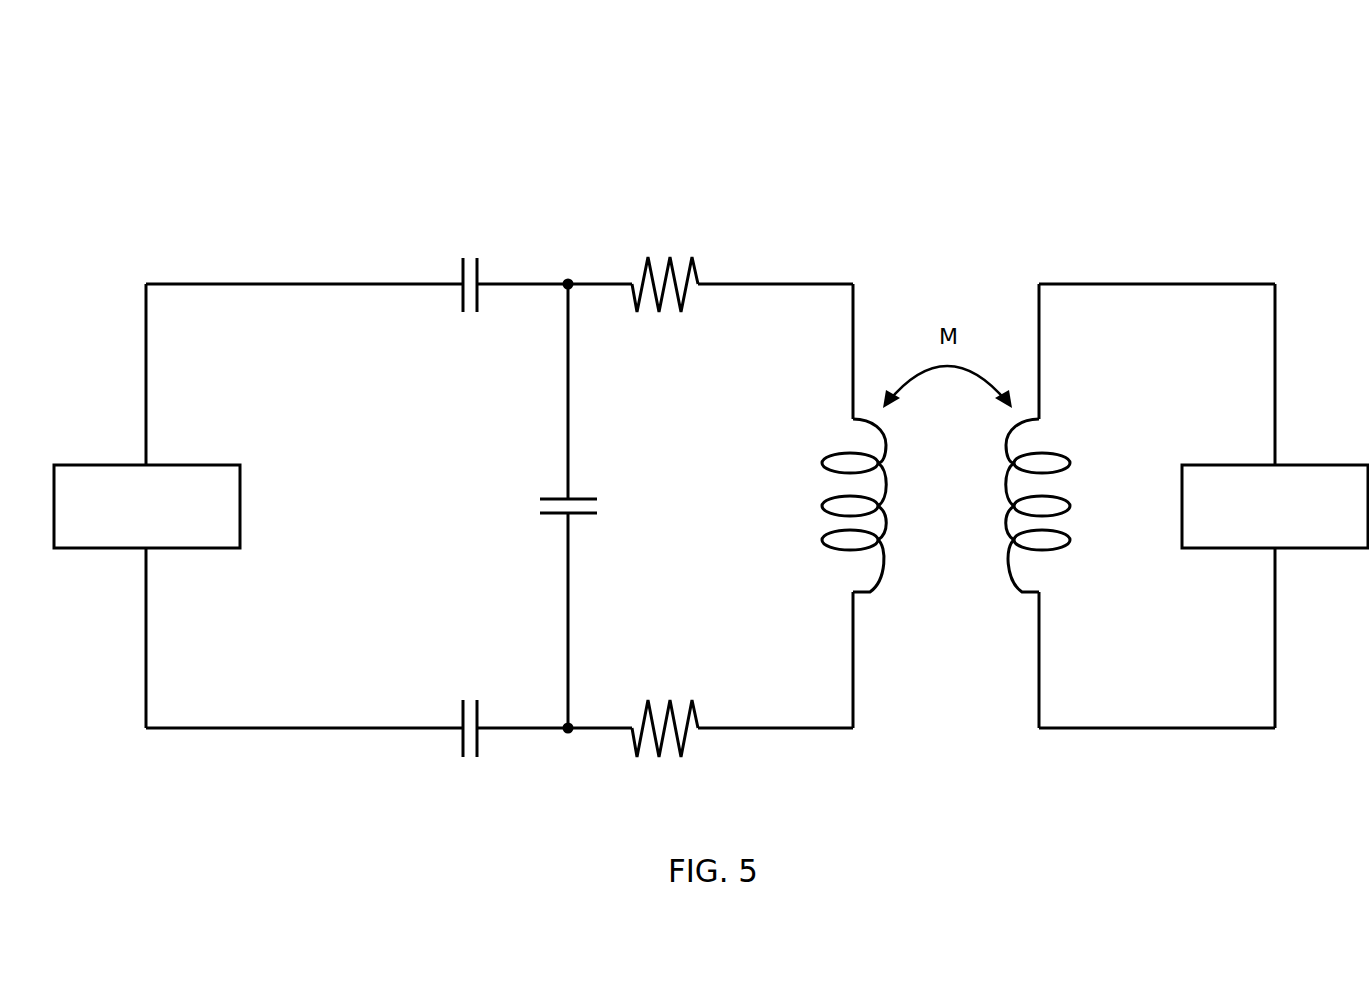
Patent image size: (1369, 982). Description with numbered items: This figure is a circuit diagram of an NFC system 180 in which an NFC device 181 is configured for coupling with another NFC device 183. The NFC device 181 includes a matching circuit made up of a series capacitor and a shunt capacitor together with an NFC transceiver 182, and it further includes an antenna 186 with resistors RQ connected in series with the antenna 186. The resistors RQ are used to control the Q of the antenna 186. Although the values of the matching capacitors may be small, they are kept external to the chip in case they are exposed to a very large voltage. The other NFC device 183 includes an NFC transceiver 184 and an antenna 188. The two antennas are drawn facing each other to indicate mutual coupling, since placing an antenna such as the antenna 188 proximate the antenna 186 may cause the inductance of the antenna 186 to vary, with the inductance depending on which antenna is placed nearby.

The system 180 is at (1101, 90).
The NFC device 181 is at (330, 284).
The NFC transceiver 182 is at (190, 465).
The NFC device 183 is at (1199, 728).
The NFC transceiver 184 is at (1312, 465).
The antenna 186 is at (886, 563).
The antenna 188 is at (1007, 563).